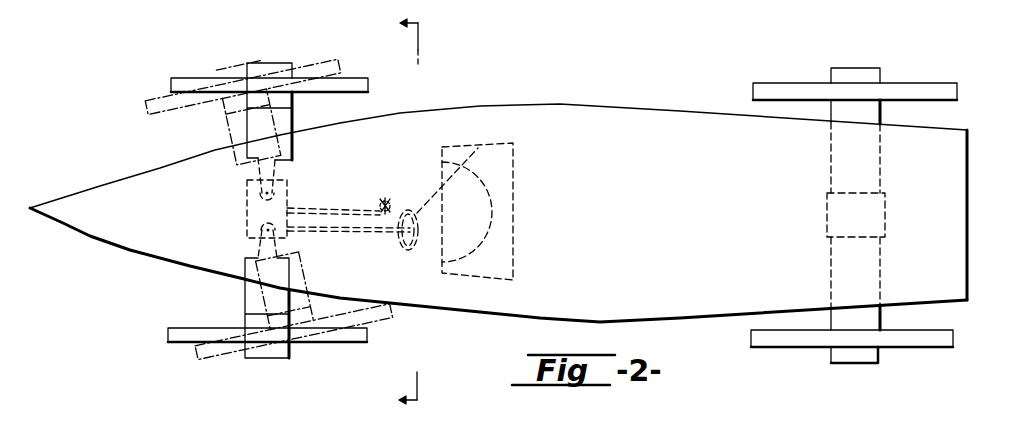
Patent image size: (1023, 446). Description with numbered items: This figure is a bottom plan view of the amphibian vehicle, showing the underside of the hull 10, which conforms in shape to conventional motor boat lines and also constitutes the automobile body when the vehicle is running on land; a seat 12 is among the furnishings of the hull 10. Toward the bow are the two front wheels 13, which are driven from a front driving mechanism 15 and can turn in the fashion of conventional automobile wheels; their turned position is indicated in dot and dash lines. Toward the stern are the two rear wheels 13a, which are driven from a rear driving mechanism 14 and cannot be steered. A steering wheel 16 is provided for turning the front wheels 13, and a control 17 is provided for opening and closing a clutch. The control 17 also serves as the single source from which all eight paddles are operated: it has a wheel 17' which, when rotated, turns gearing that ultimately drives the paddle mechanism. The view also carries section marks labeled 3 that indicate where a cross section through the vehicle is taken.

The hull 10 is at (556, 117).
The seat 12 is at (511, 145).
The front wheels 13 is at (355, 82).
The rear wheels 13a is at (938, 92).
The rear driving mechanism 14 is at (877, 257).
The front driving mechanism 15 is at (238, 307).
The steering wheel 16 is at (448, 193).
The control 17 is at (348, 168).
The wheel 17' is at (392, 177).
The section line 3- 3 is at (419, 210).